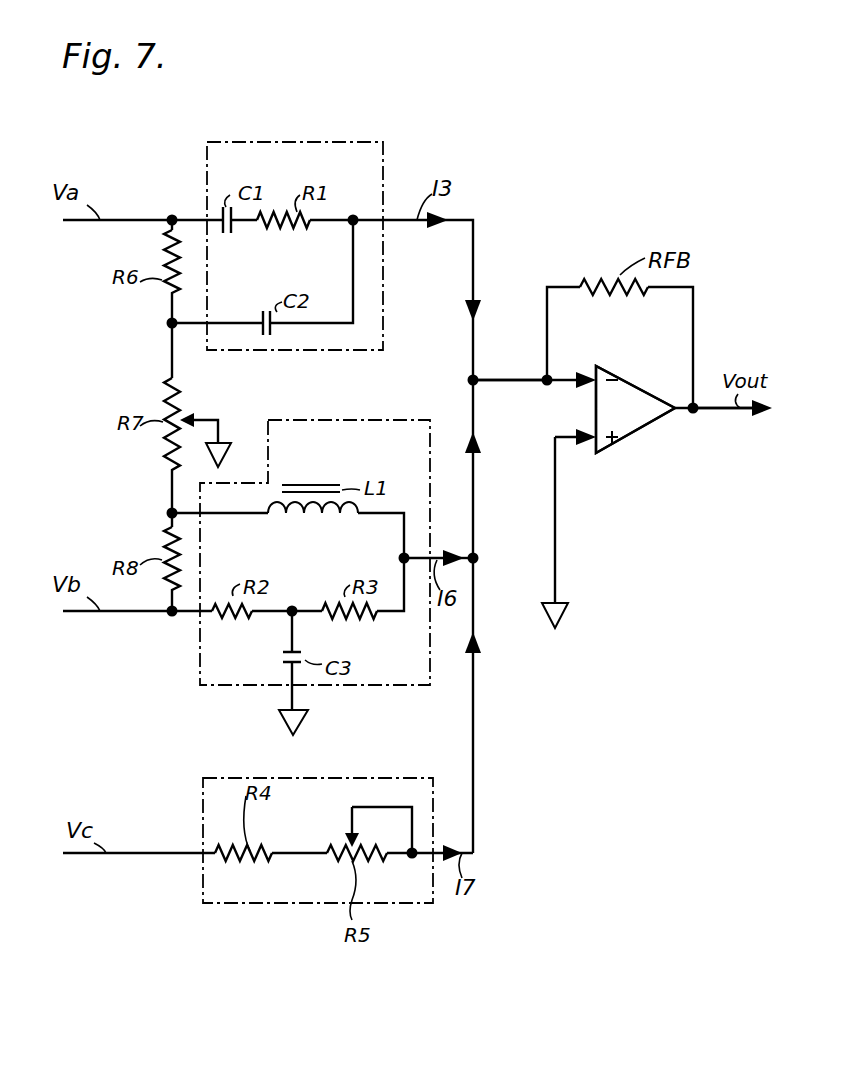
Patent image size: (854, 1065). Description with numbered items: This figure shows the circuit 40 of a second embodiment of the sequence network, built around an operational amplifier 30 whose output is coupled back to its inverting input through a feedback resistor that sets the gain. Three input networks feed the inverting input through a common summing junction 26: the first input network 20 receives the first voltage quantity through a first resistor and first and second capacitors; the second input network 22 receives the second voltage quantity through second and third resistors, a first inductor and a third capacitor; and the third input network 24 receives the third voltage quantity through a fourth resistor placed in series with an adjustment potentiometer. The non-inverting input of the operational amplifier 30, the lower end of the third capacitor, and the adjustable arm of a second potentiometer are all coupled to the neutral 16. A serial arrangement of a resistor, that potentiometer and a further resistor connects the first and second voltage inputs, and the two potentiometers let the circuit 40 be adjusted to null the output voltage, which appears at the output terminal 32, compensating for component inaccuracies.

The circuit 40 is at (512, 98).
The first input network 20 is at (318, 142).
The second input network 22 is at (375, 420).
The third input network 24 is at (355, 778).
The summing junction 26 is at (506, 378).
The operational amplifier 30 is at (630, 436).
The output terminal 32 is at (712, 410).
The neutral 16 is at (225, 458).